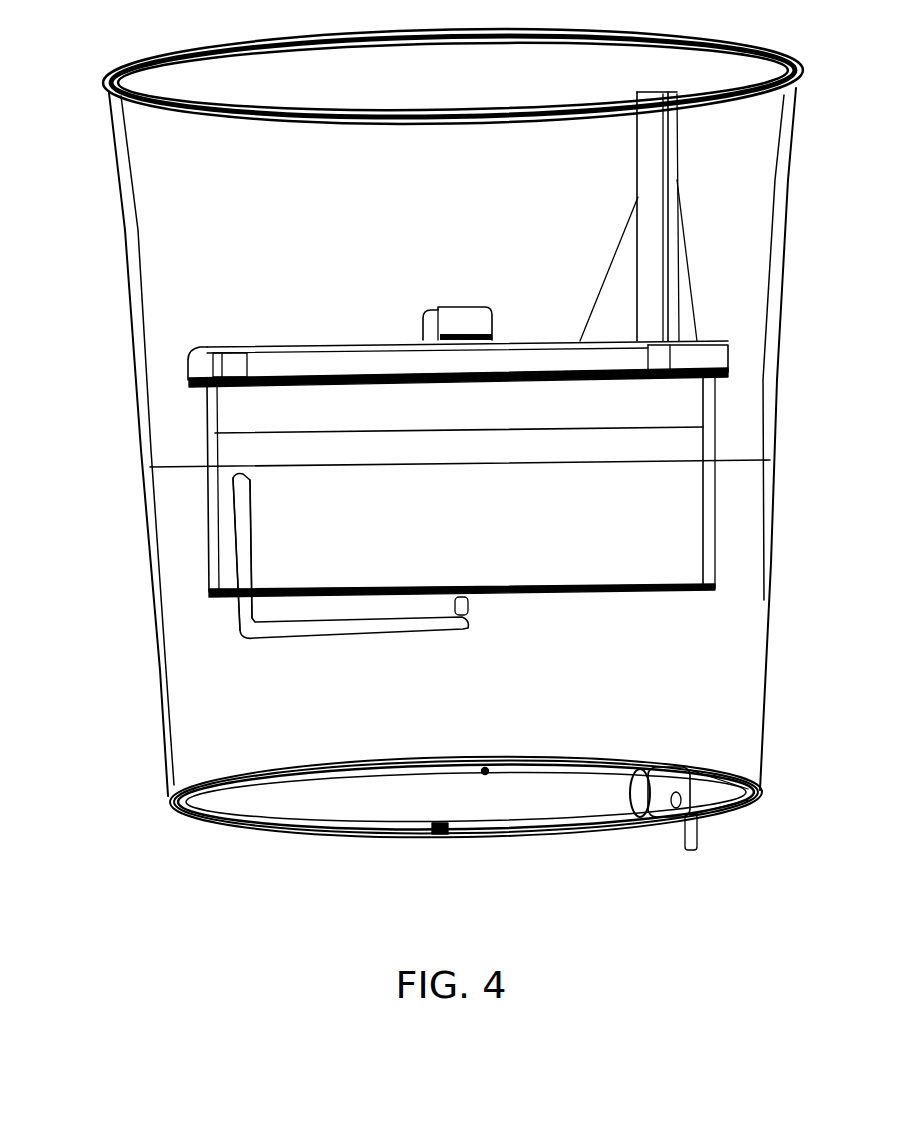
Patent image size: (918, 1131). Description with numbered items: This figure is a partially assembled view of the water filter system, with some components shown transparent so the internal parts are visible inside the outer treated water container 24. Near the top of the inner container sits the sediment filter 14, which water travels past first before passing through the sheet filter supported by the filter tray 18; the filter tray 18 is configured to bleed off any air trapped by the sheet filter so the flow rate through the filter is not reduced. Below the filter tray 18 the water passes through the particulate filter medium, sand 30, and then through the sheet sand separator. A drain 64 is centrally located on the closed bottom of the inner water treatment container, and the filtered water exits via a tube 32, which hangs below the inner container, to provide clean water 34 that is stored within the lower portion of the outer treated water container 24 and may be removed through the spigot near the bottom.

The sediment filter 14 is at (440, 323).
The filter tray 18 is at (207, 370).
The outer treated water container 24 is at (163, 732).
The sand 30 is at (653, 425).
The tube 32 is at (216, 591).
The clean water 34 is at (740, 462).
The drain 64 is at (468, 603).